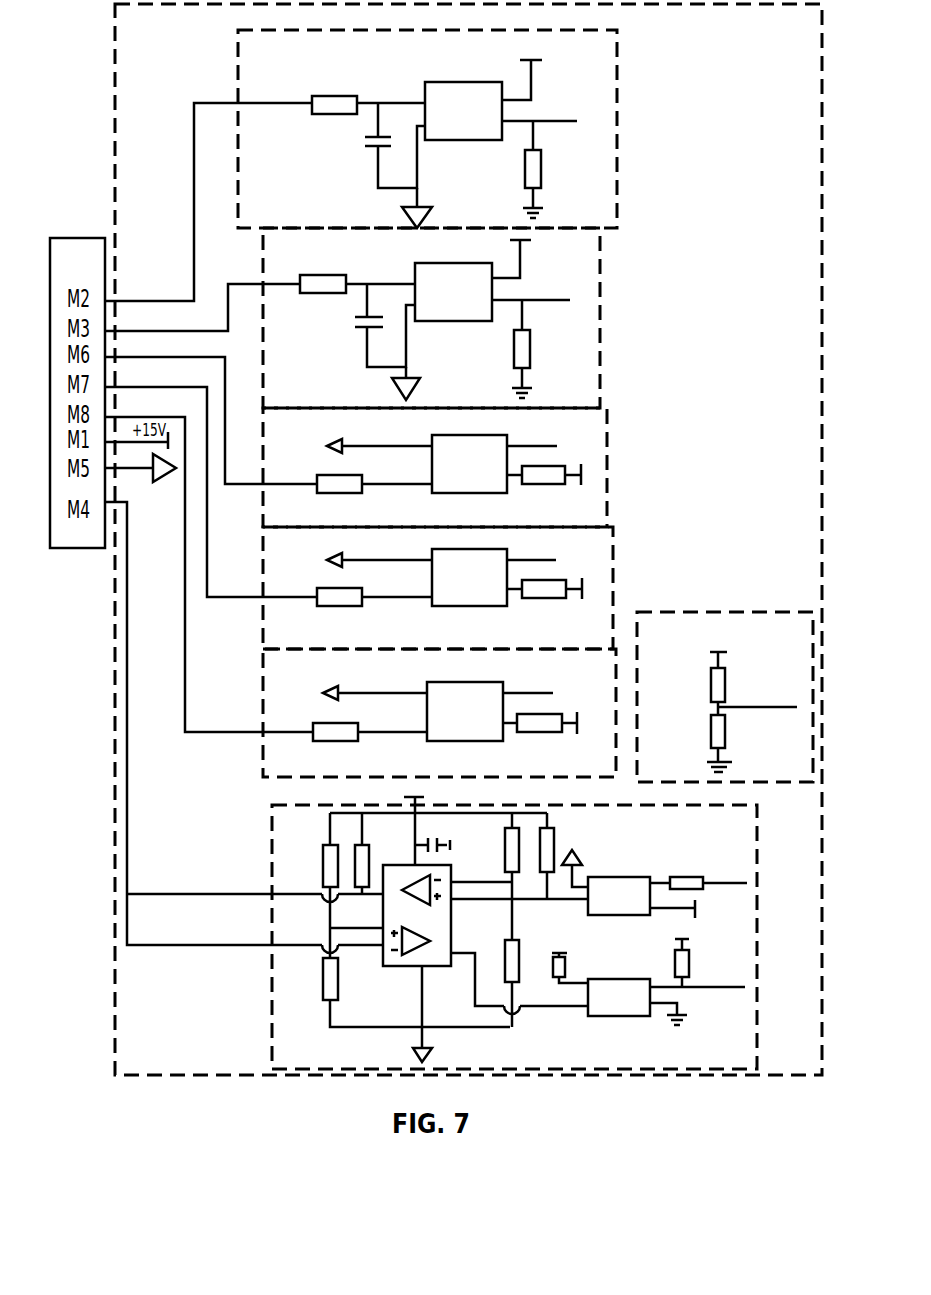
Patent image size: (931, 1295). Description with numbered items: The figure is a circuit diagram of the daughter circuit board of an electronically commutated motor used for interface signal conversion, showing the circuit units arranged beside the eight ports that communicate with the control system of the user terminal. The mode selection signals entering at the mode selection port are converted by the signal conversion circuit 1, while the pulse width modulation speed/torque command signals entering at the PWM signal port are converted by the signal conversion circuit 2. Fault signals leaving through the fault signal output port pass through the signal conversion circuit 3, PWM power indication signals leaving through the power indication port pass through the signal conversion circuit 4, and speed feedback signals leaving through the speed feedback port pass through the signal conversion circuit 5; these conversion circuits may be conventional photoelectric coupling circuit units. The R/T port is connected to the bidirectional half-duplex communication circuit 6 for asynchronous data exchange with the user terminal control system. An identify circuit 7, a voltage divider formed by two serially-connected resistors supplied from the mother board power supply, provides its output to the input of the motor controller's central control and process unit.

The signal conversion circuit 1 is at (427, 129).
The signal conversion circuit 2 is at (431, 318).
The signal conversion circuit 3 is at (435, 467).
The signal conversion circuit 4 is at (438, 588).
The signal conversion circuit 5 is at (439, 713).
The bidirectional half-duplex communication circuit 6 is at (303, 1046).
The identify circuit 7 is at (802, 622).